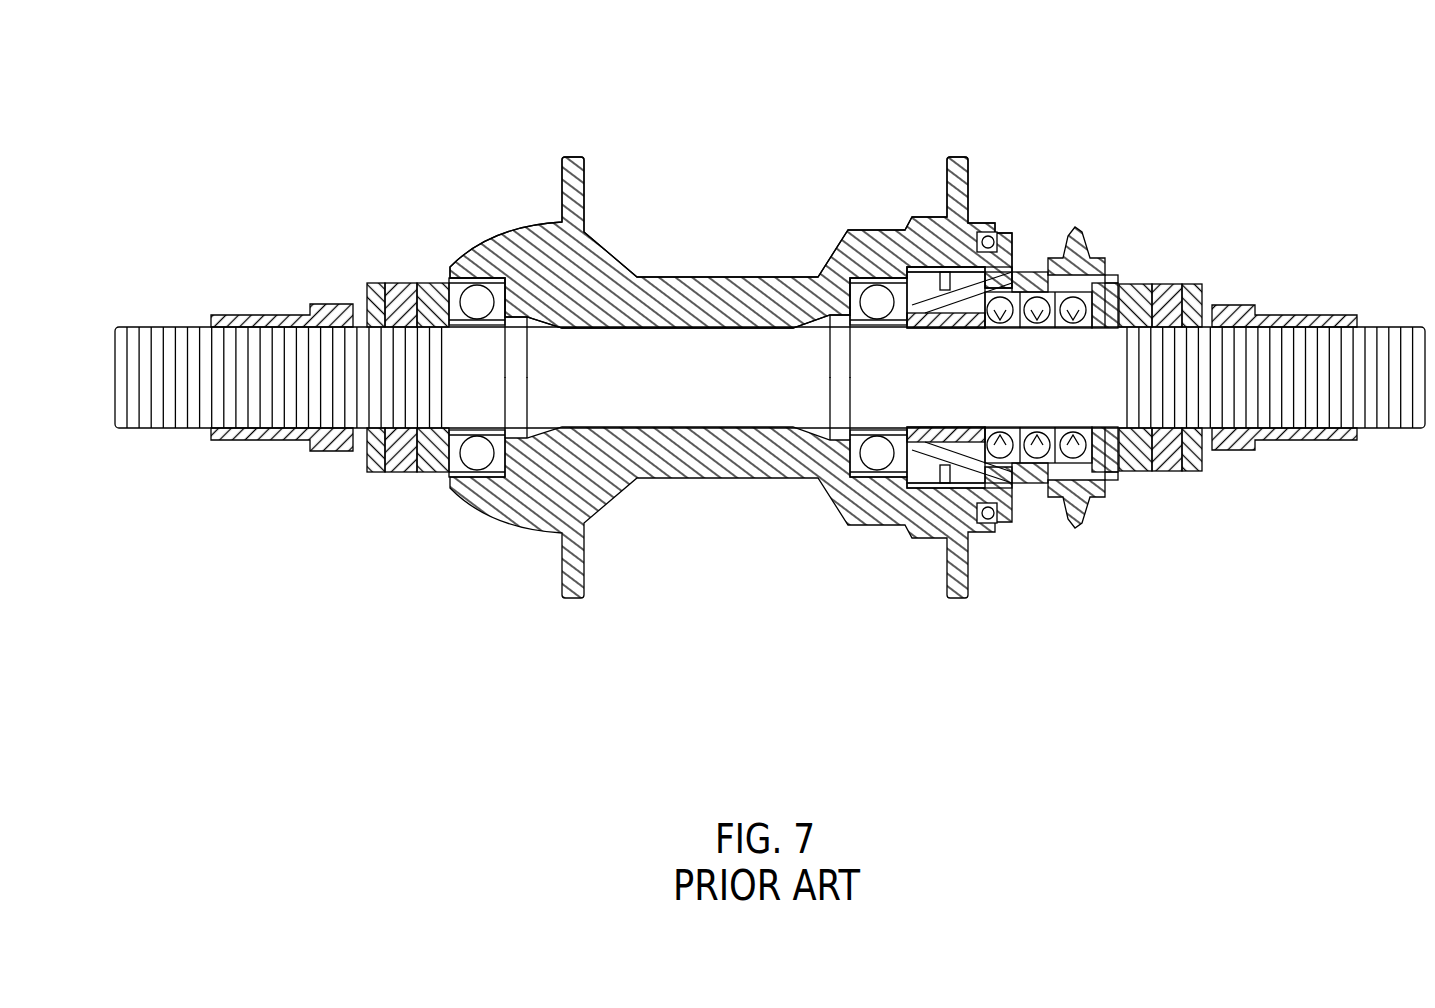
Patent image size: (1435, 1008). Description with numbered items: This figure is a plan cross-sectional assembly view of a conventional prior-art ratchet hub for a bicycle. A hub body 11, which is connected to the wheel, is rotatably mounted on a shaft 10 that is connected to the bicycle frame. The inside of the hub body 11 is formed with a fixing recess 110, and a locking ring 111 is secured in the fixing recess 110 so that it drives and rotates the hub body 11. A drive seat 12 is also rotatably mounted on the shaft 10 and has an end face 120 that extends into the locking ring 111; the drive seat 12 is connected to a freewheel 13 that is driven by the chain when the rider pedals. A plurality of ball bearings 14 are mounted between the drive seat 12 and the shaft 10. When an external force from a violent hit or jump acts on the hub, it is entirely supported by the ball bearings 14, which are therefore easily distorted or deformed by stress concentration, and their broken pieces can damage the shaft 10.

The shaft 10 is at (758, 418).
The hub body 11 is at (503, 529).
The fixing recess 110 is at (731, 242).
The locking ring 111 is at (930, 262).
The end face 120 is at (923, 507).
The drive seat 12 is at (1033, 500).
The freewheel 13 is at (1095, 522).
The ball bearings 14 is at (998, 262).